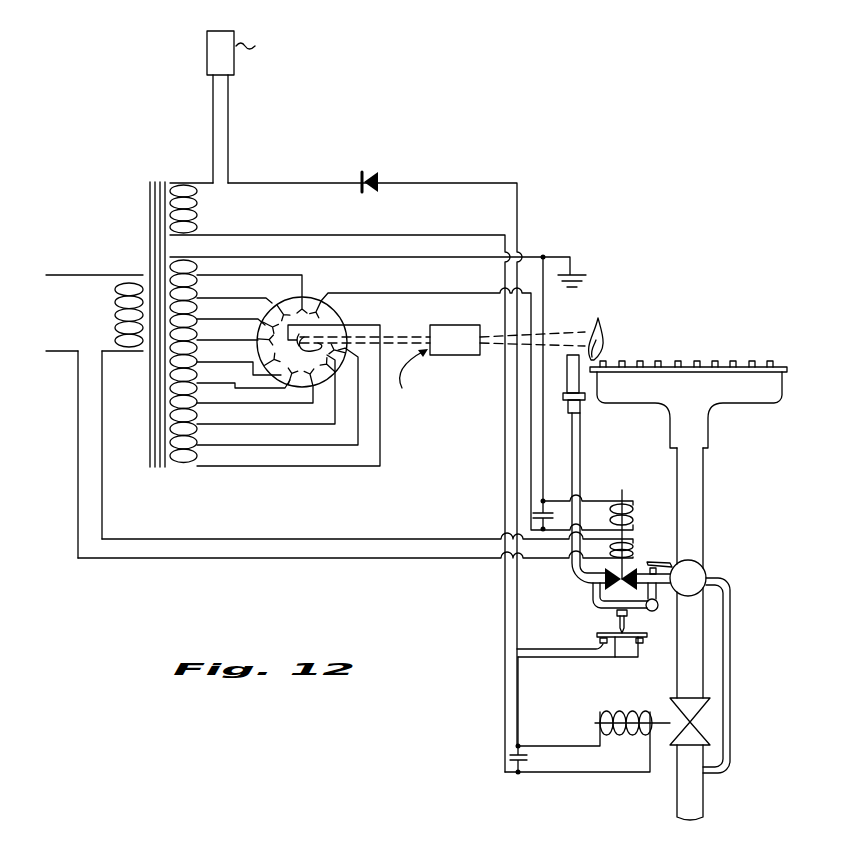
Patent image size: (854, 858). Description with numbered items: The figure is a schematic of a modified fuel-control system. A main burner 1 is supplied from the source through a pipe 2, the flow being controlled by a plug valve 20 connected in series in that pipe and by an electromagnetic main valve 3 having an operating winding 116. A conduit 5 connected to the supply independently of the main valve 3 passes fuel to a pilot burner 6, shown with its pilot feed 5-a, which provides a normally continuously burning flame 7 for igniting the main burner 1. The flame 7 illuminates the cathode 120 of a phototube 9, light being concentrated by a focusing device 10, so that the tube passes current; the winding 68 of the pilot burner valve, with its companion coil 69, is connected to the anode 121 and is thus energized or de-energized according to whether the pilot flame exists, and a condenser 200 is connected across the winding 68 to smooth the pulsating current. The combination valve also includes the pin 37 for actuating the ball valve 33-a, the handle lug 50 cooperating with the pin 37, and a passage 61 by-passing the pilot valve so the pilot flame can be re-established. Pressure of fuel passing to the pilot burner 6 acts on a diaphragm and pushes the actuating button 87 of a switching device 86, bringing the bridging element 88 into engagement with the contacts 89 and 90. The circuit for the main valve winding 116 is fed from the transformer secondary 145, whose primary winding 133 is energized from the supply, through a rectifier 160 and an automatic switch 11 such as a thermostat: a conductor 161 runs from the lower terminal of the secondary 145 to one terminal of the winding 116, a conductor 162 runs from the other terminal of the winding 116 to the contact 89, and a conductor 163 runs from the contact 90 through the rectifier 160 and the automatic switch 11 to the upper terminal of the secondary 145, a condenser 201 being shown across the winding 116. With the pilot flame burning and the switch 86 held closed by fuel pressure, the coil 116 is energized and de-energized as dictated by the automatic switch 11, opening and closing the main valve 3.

The condition responsive switch mechanism 11 is at (206, 44).
The transformer secondary 145 is at (200, 214).
The transformer primary winding 133 is at (115, 305).
The anode 121 is at (318, 306).
The phototube 9 is at (347, 315).
The cathode 120 is at (306, 353).
The focusing device 10 is at (448, 325).
The conductor 163 is at (322, 184).
The rectifier 160 is at (377, 171).
The conductor 161 is at (447, 237).
The flame 7 is at (603, 335).
The pilot burner 6 is at (566, 376).
The main burner 1 is at (746, 404).
The pilot gas pipe 5-a is at (580, 454).
The pipe 2 is at (705, 481).
The winding 68 is at (664, 494).
The coil 69 is at (638, 540).
The actuating button 87 is at (639, 562).
The handle lug 50 is at (667, 570).
The plug valve 20 is at (710, 567).
The pin 37 is at (688, 578).
The condenser 200 is at (531, 516).
The passage 61 is at (592, 598).
The valve 33-a is at (658, 606).
The contact 89 is at (645, 641).
The contact 90 is at (604, 646).
The bridging element 88 is at (582, 657).
The switching device 86 is at (627, 644).
The conduit 5 is at (731, 661).
The main valve 3 is at (673, 716).
The conductor 162 is at (522, 703).
The operating winding 116 is at (609, 738).
The capacitor 201 is at (510, 759).